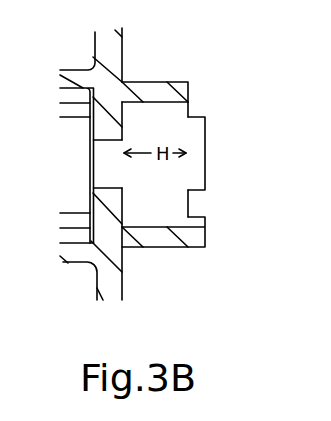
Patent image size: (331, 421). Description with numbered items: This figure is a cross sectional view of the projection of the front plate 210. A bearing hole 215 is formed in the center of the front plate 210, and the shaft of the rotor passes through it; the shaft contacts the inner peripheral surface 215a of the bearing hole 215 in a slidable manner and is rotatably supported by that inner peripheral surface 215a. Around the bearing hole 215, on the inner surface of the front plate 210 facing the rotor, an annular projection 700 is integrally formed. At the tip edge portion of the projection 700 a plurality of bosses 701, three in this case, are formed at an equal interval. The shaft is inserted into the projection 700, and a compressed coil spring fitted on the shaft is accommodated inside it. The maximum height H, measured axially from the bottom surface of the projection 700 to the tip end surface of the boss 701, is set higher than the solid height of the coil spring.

The front plate 210 is at (95, 278).
The bearing hole 215 is at (105, 180).
The inner peripheral surface 215a is at (108, 147).
The projection 700 is at (153, 82).
The boss 701 is at (205, 140).